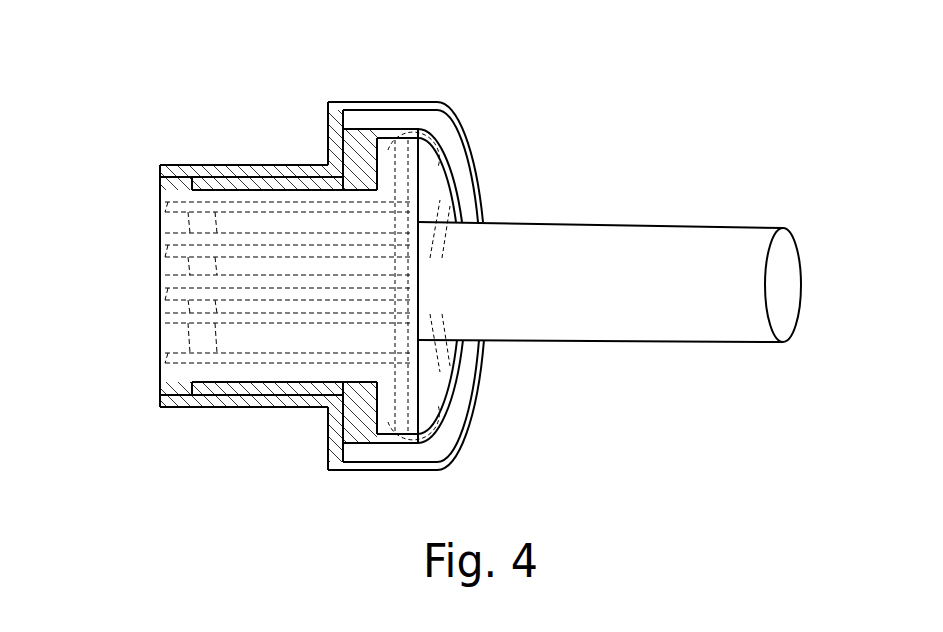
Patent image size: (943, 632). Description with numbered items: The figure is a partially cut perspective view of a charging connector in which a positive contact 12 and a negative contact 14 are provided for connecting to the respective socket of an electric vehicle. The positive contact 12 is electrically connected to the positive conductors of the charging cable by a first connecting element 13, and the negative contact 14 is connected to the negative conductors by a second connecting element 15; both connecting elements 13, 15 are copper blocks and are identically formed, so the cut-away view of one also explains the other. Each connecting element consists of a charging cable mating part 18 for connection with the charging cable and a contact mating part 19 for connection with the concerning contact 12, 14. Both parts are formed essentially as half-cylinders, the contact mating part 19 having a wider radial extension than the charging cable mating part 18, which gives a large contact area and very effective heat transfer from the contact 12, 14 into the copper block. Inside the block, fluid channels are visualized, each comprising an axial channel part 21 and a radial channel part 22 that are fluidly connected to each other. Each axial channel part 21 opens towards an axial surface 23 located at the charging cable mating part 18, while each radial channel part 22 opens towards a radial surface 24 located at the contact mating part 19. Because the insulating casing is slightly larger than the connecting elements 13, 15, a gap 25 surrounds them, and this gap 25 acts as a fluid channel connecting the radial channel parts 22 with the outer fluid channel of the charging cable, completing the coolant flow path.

The positive contact 12 is at (609, 243).
The negative contact 14 is at (655, 238).
The first connecting element 13 is at (228, 302).
The second connecting element 15 is at (135, 365).
The charging cable mating part 18 is at (250, 410).
The contact mating part 19 is at (390, 100).
The axial channel part 21 is at (223, 198).
The radial channel part 22 is at (425, 152).
The axial surface 23 is at (158, 220).
The radial surface 24 is at (382, 448).
The gap 25 is at (352, 100).